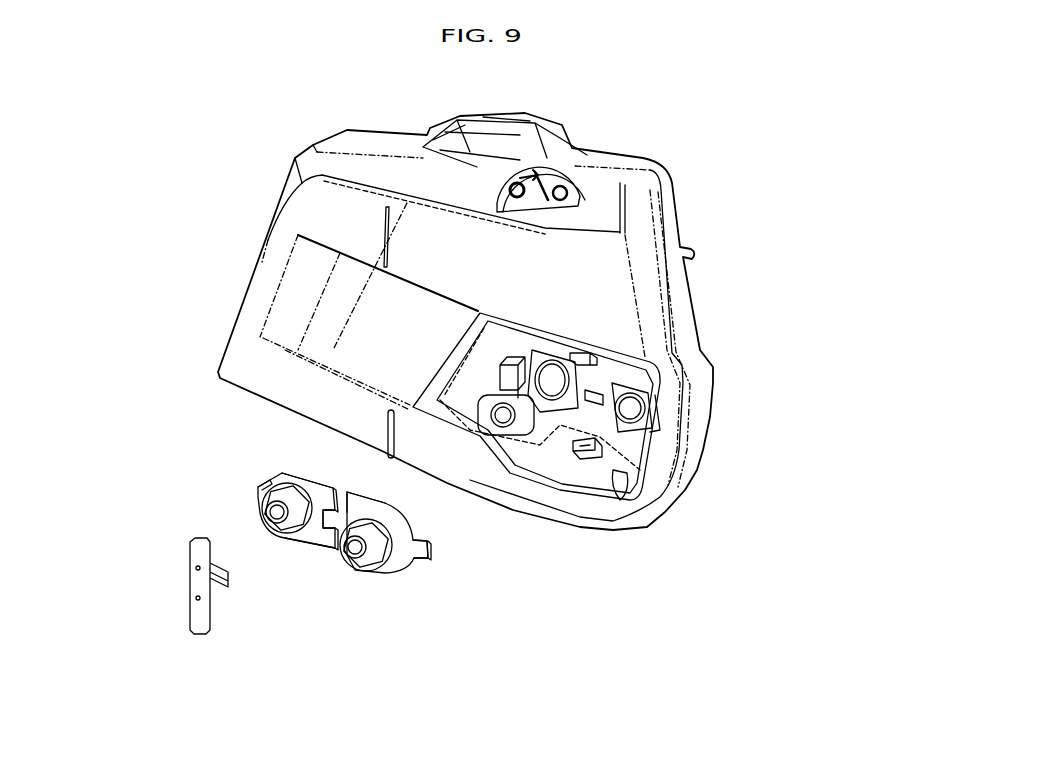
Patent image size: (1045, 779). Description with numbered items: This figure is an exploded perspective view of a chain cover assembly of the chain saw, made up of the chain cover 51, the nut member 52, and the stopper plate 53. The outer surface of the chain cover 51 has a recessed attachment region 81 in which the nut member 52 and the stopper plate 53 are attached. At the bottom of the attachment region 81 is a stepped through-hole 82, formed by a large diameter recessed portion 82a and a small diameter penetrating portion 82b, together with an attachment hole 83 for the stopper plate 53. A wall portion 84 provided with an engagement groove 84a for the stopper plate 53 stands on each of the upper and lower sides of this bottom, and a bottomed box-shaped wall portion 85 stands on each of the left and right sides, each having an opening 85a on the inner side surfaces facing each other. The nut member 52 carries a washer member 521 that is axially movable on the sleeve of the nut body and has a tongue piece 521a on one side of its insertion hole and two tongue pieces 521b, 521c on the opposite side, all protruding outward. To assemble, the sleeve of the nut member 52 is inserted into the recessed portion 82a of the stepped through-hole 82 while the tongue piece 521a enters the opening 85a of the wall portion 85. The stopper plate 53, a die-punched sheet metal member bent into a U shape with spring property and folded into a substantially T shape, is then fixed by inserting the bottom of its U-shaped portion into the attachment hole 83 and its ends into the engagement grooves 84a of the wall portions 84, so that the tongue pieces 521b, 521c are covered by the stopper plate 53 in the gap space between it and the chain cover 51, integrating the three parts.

The chain cover 51 is at (688, 435).
The nut member 52 is at (312, 540).
The stopper plate 53 is at (215, 590).
The attachment region 81 is at (615, 377).
The stepped through-hole 82 is at (558, 517).
The recessed portion 82a is at (630, 420).
The penetrating portion 82b is at (645, 422).
The attachment hole 83 is at (597, 392).
The wall portion 84 is at (585, 452).
The engagement groove 84a is at (618, 445).
The bottomed box-shaped wall portion 85 is at (657, 423).
The opening 85a is at (528, 352).
The washer member 521 is at (344, 515).
The tongue piece 521a is at (417, 562).
The tongue piece 521b is at (322, 540).
The tongue piece 521c is at (323, 493).